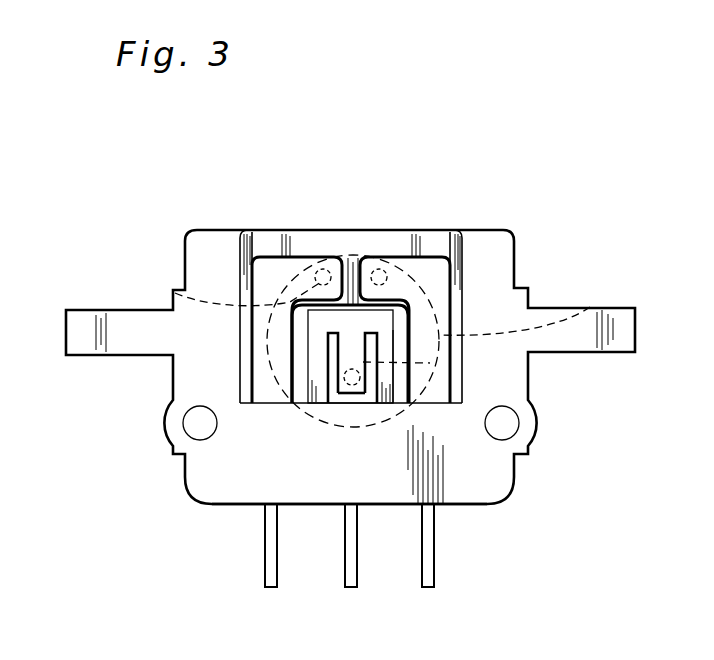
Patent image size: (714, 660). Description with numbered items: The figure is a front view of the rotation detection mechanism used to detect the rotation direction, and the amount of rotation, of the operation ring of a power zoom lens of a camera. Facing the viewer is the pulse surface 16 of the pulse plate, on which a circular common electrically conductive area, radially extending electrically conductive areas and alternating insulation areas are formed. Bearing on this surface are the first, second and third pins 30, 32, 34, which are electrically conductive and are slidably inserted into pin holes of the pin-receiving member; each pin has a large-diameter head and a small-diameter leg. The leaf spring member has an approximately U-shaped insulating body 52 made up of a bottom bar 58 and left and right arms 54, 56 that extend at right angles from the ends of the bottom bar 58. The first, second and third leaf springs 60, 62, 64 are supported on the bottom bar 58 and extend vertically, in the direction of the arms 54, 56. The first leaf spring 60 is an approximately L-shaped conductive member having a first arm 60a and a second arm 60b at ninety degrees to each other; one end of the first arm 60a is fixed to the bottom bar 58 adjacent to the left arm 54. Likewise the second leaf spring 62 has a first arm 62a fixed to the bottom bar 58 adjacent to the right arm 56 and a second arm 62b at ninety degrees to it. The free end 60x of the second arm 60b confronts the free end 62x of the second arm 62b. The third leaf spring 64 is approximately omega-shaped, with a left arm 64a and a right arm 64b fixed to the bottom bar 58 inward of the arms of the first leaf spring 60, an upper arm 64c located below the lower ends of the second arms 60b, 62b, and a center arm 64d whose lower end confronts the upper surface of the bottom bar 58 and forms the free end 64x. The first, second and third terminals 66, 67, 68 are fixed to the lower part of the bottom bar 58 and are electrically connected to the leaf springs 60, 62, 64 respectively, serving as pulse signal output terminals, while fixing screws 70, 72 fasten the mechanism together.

The pulse surface 16 is at (590, 307).
The first pin 30 is at (175, 293).
The second pin 32 is at (384, 285).
The third pin 34 is at (430, 363).
The body 52 is at (514, 472).
The left arm 54 is at (186, 253).
The right arm 56 is at (513, 254).
The bottom bar 58 is at (480, 504).
The first leaf spring 60 is at (277, 260).
The first arm 60a is at (258, 295).
The second arm 60b is at (286, 258).
The free end 60x is at (322, 268).
The second leaf spring 62 is at (435, 260).
The first arm 62a is at (444, 295).
The second arm 62b is at (416, 258).
The free end 62x is at (380, 268).
The third leaf spring 64 is at (324, 437).
The left arm 64a is at (335, 392).
The right arm 64b is at (410, 400).
The upper arm 64c is at (322, 378).
The center arm 64d is at (385, 400).
The free end 64x is at (355, 390).
The first terminal 66 is at (270, 587).
The second terminal 67 is at (350, 587).
The third terminal 68 is at (428, 587).
The fixing screw 70 is at (193, 418).
The fixing screw 72 is at (507, 423).